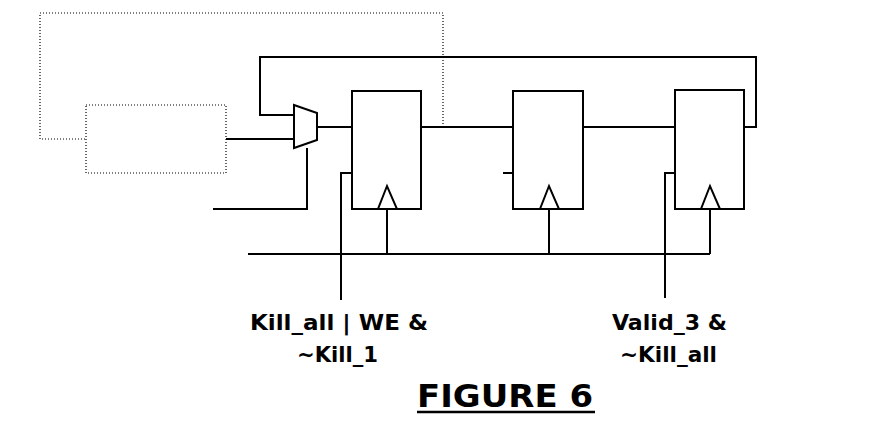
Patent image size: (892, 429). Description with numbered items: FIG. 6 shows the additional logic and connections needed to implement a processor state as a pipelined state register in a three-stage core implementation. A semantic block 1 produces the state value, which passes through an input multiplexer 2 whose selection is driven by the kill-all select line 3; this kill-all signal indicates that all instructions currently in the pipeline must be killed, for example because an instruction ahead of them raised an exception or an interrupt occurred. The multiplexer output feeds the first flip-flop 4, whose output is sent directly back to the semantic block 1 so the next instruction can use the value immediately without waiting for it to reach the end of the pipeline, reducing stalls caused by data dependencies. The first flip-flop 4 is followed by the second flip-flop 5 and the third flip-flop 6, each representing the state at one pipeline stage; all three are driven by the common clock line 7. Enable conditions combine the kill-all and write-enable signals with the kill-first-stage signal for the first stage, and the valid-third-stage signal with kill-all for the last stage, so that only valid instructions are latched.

The semantics block 1 is at (156, 139).
The input multiplexer (in) 2 is at (289, 134).
The Kill_all select line 3 is at (215, 185).
The first flip-flop (out) 4 is at (427, 195).
The second flip-flop 5 is at (589, 172).
The third flip-flop 6 is at (704, 194).
The clk line 7 is at (463, 243).